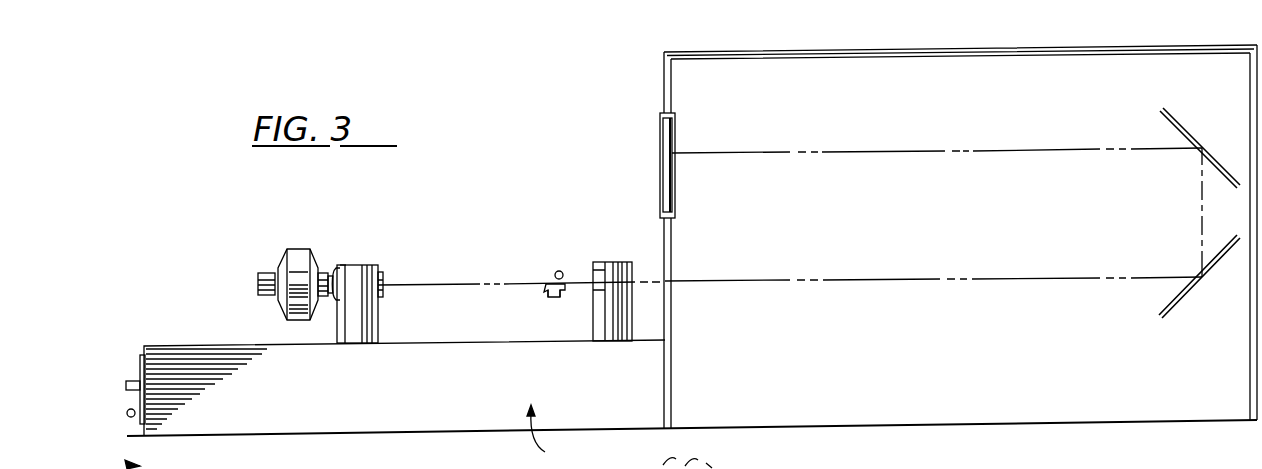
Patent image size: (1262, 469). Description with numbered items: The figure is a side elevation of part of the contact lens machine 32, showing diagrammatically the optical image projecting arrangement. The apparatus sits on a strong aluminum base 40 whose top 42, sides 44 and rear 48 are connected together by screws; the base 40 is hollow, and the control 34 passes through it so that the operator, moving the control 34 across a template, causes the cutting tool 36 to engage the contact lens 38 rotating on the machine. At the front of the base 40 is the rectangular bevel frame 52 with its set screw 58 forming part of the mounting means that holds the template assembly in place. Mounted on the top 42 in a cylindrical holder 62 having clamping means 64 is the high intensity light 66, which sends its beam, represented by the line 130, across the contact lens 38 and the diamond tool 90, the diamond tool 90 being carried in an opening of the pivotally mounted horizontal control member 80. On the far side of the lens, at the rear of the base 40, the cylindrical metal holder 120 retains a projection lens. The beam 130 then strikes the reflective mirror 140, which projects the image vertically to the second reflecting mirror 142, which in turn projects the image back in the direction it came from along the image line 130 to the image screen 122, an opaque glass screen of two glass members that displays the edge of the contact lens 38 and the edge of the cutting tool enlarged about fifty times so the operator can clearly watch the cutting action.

The machine 32 is at (430, 421).
The control 34 is at (126, 385).
The cutting tool 36 is at (563, 282).
The contact lens 38 is at (566, 270).
The base 40 is at (555, 434).
The top 42 is at (237, 318).
The sides 44 is at (330, 387).
The rear 48 is at (665, 380).
The bevel frame 52 is at (140, 357).
The set screw 58 is at (127, 414).
The cylindrical holder 62 is at (357, 268).
The clamping means 64 is at (347, 260).
The high intensity light 66 is at (312, 218).
The horizontal control member 80 is at (546, 298).
The diamond tool 90 is at (584, 316).
The cylindrical metal holder 120 is at (610, 320).
The image screen 122 is at (675, 130).
The beam of light 130 is at (405, 290).
The reflective mirror 140 is at (1185, 295).
The second reflecting mirror 142 is at (1185, 128).